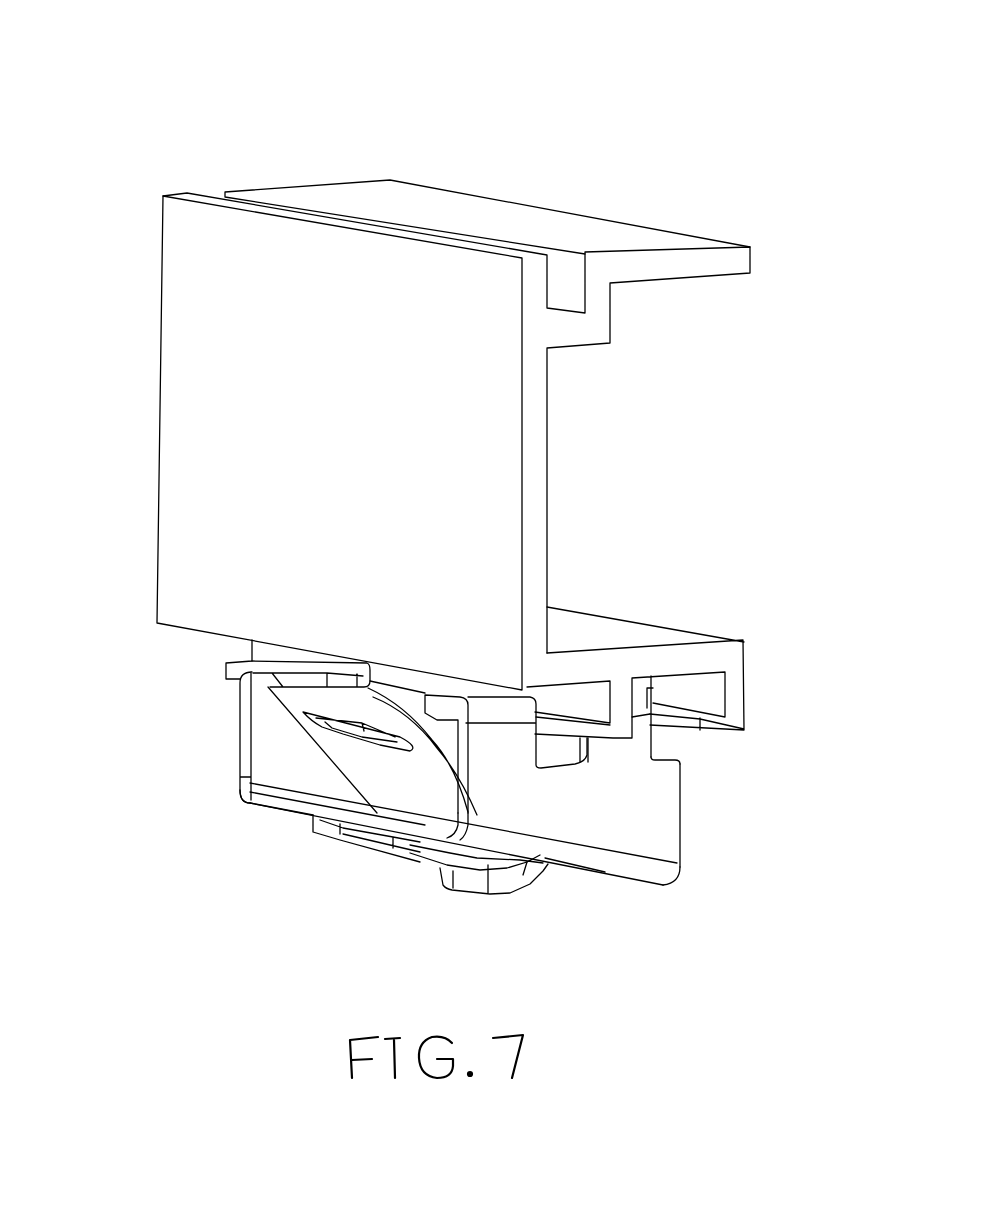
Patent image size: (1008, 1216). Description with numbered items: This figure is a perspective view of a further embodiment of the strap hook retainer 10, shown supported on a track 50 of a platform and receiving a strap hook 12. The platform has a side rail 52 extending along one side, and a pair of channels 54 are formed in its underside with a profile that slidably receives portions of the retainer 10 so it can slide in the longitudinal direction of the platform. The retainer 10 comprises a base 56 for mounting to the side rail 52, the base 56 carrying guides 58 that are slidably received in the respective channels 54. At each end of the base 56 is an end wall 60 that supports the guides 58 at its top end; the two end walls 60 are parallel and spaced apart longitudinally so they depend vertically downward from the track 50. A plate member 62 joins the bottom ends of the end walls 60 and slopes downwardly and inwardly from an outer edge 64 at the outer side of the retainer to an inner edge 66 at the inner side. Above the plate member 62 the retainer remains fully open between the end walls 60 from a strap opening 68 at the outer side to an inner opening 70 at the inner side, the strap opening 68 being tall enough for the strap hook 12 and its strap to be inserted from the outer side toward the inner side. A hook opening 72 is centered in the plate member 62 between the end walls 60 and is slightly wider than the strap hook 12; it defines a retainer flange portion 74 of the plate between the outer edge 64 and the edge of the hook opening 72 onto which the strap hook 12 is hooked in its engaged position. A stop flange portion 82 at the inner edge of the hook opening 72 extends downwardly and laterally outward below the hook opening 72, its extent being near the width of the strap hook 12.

The strap hook retainer 10 is at (412, 72).
The strap hook 12 is at (390, 770).
The track 50 is at (699, 668).
The side rail 52 is at (546, 427).
The channels 54 is at (597, 697).
The base 56 is at (700, 758).
The guides 58 is at (641, 708).
The end wall 60 is at (661, 817).
The plate member 62 is at (602, 875).
The outer edge 64 is at (285, 803).
The inner edge 66 is at (678, 882).
The strap opening 68 is at (280, 736).
The inner opening 70 is at (682, 845).
The hook opening 72 is at (547, 867).
The retainer flange portion 74 is at (307, 822).
The stop flange portion 82 is at (482, 893).